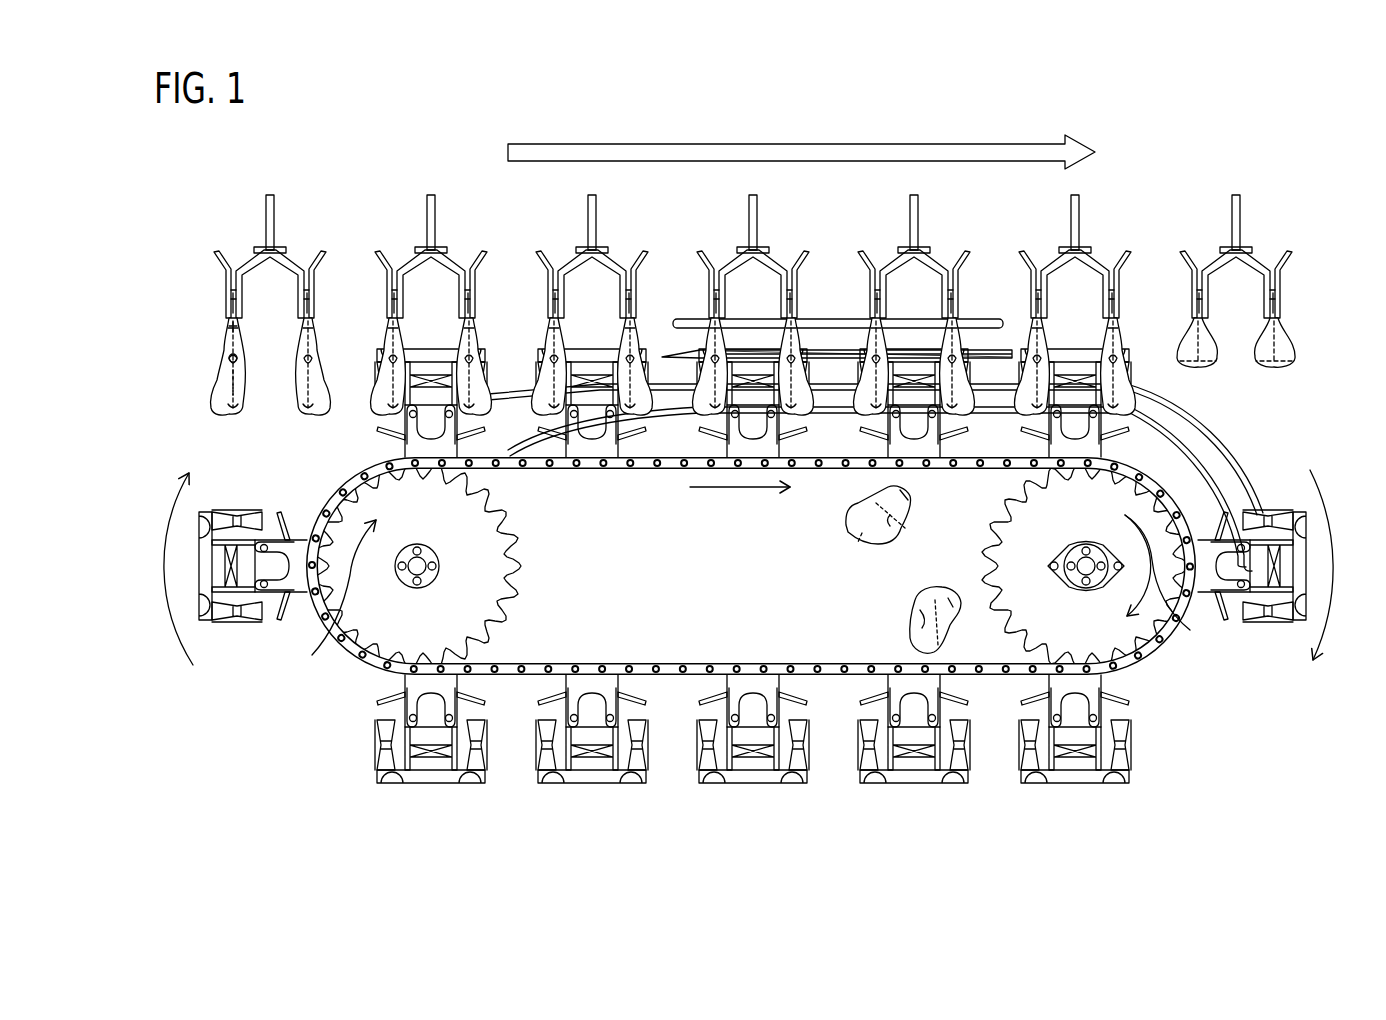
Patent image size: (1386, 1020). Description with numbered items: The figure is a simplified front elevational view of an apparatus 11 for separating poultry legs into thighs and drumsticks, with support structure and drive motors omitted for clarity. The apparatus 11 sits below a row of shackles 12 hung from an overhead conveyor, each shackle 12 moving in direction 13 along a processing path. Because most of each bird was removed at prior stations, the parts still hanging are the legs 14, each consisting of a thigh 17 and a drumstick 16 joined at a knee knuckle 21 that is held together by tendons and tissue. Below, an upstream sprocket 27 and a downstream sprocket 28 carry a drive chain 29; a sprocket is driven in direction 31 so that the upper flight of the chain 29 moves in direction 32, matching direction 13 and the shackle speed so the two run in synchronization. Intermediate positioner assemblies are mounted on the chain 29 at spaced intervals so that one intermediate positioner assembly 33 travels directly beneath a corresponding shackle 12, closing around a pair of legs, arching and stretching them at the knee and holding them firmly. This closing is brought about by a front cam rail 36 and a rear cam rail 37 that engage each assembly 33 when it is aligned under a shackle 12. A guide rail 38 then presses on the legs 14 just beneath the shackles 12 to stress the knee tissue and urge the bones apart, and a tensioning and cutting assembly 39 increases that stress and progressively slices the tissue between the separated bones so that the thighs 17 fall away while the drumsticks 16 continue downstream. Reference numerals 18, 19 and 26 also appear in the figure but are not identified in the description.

The apparatus 11 is at (1266, 121).
The shackle 12 is at (283, 248).
The direction 13 is at (789, 143).
The legs 14 is at (202, 384).
The drumstick 16 is at (224, 350).
The thigh 17 is at (226, 402).
The hock 18 is at (236, 330).
The drumstick 19 is at (230, 376).
The knee knuckle 21 is at (229, 356).
The conveyor 26 is at (707, 622).
The upstream sprocket 27 is at (485, 576).
The downstream sprocket 28 is at (1034, 577).
The drive chain 29 is at (668, 667).
The direction 31 is at (1204, 650).
The direction 32 is at (730, 488).
The intermediate positioner assembly 33 is at (240, 626).
The front cam rail 36 is at (668, 414).
The rear cam rail 37 is at (665, 380).
The guide rail 38 is at (752, 318).
The tensioning and cutting assembly 39 is at (828, 372).